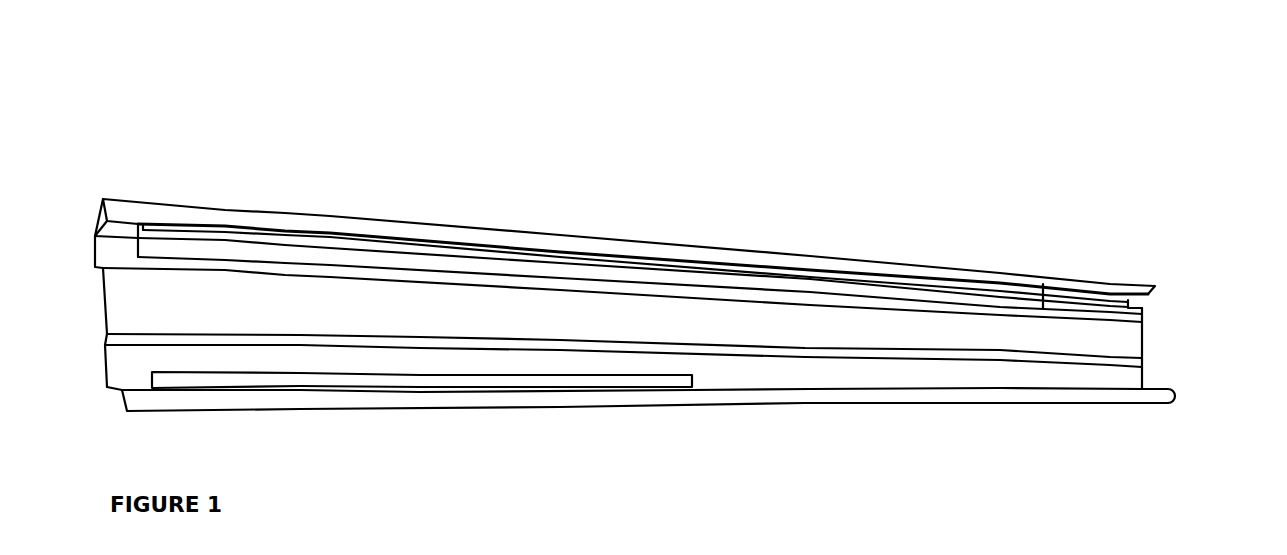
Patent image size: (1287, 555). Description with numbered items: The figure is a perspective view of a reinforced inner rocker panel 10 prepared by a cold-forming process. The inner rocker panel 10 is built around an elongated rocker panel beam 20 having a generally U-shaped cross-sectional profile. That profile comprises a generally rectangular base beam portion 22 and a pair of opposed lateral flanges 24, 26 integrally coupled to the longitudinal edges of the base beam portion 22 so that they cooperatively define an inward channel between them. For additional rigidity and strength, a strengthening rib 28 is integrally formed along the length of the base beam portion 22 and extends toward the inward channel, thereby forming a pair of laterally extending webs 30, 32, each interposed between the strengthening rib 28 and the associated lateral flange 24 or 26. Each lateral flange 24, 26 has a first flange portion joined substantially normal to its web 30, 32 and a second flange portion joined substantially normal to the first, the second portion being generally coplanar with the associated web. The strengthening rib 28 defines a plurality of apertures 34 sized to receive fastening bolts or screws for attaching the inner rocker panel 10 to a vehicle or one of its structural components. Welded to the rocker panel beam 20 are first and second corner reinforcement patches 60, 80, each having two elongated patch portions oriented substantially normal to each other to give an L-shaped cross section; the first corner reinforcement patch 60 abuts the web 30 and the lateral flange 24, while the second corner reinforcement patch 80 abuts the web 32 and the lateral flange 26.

The reinforced inner rocker panel 10 is at (1002, 133).
The rocker panel beam 20 is at (1147, 384).
The base beam portion 22 is at (1147, 320).
The lateral flange 24 is at (484, 237).
The lateral flange 26 is at (583, 404).
The strengthening rib 28 is at (825, 333).
The web 30 is at (1043, 285).
The web 32 is at (900, 375).
The apertures 34 is at (697, 305).
The first corner reinforcement patch 60 is at (213, 250).
The second corner reinforcement patch 80 is at (341, 380).